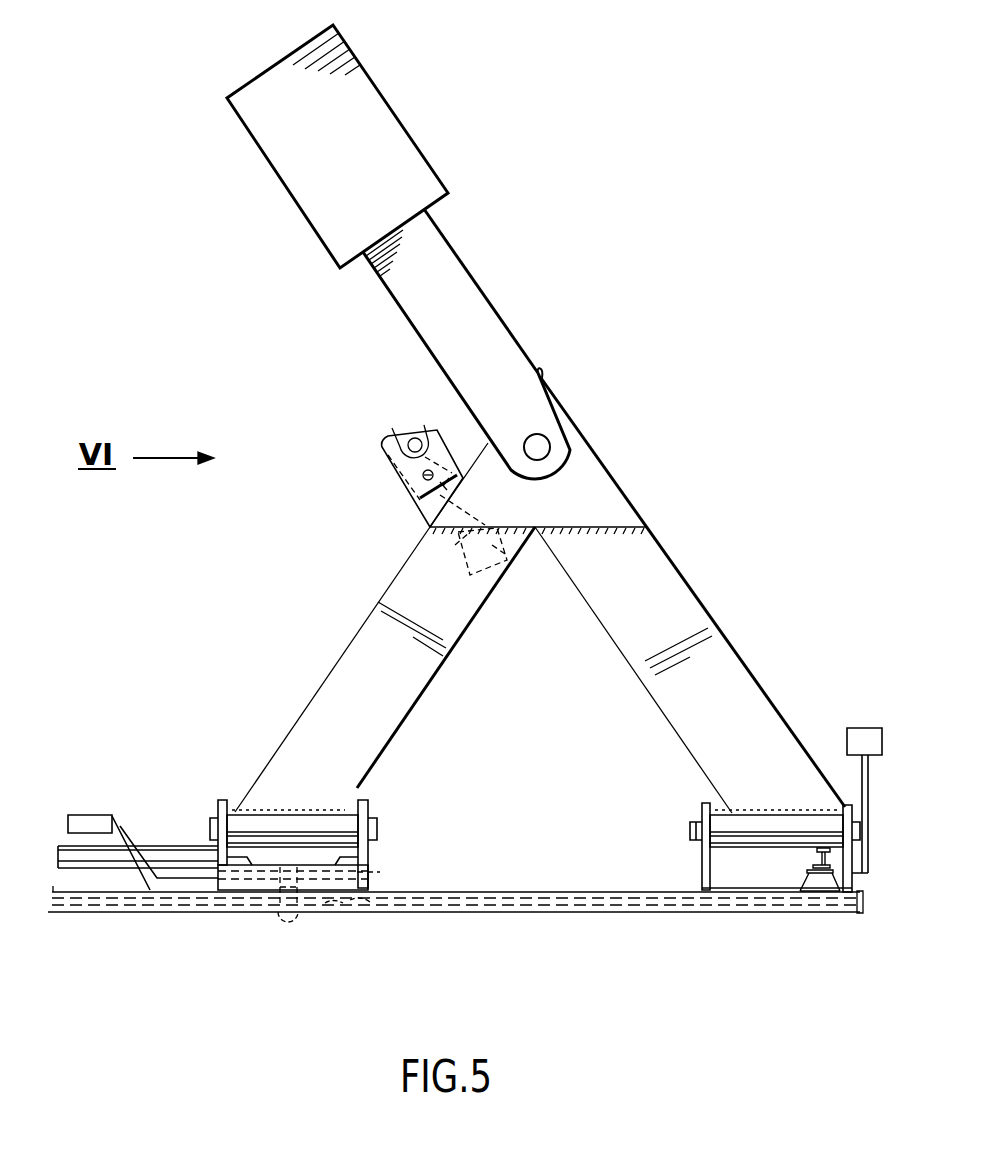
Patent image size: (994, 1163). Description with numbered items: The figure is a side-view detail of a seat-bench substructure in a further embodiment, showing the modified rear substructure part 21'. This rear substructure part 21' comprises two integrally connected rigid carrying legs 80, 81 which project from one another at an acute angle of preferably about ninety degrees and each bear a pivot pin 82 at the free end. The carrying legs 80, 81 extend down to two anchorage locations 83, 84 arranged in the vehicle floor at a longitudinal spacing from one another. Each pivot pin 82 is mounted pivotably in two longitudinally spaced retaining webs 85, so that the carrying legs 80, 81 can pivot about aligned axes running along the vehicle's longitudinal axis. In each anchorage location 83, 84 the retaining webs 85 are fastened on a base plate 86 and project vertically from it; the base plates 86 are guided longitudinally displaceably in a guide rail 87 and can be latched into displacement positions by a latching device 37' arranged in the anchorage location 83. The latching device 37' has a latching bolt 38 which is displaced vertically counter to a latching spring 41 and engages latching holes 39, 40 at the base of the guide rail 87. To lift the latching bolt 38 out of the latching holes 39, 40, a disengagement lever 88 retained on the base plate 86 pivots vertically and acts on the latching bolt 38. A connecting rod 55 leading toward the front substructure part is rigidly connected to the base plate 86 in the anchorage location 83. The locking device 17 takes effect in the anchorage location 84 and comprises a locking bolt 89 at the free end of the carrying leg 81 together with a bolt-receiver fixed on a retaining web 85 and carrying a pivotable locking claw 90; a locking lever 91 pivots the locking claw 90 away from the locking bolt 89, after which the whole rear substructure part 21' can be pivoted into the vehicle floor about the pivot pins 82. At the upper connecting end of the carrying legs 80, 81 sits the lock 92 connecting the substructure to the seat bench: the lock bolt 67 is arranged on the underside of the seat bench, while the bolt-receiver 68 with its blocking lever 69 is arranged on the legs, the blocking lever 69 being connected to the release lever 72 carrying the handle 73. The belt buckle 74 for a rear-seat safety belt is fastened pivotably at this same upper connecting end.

The belt buckle 74 is at (337, 146).
The rear substructure part 21' is at (576, 365).
The carrying leg 80 is at (322, 708).
The carrying leg 81 is at (712, 650).
The lock bolt 67 is at (397, 430).
The bolt-receiver 68 is at (415, 438).
The blocking lever 69 is at (422, 507).
The lock 92 is at (386, 469).
The release lever 72 is at (455, 545).
The handle 73 is at (500, 578).
The anchorage location 83 is at (155, 910).
The anchorage location 84 is at (701, 913).
The guide rail 87 is at (643, 900).
The disengagement lever 88 is at (123, 827).
The connecting rod 55 is at (162, 852).
The retaining web 85 is at (220, 812).
The pivot pin 82 is at (350, 815).
The base plate 86 is at (228, 878).
The latching spring 41 is at (357, 872).
The latching device 37' is at (259, 941).
The latching bolt 38 is at (300, 913).
The latching hole 40 is at (333, 913).
The latching hole 39 is at (373, 907).
The locking bolt 89 is at (818, 855).
The locking device 17 is at (808, 877).
The locking claw 90 is at (830, 912).
The locking lever 91 is at (868, 770).